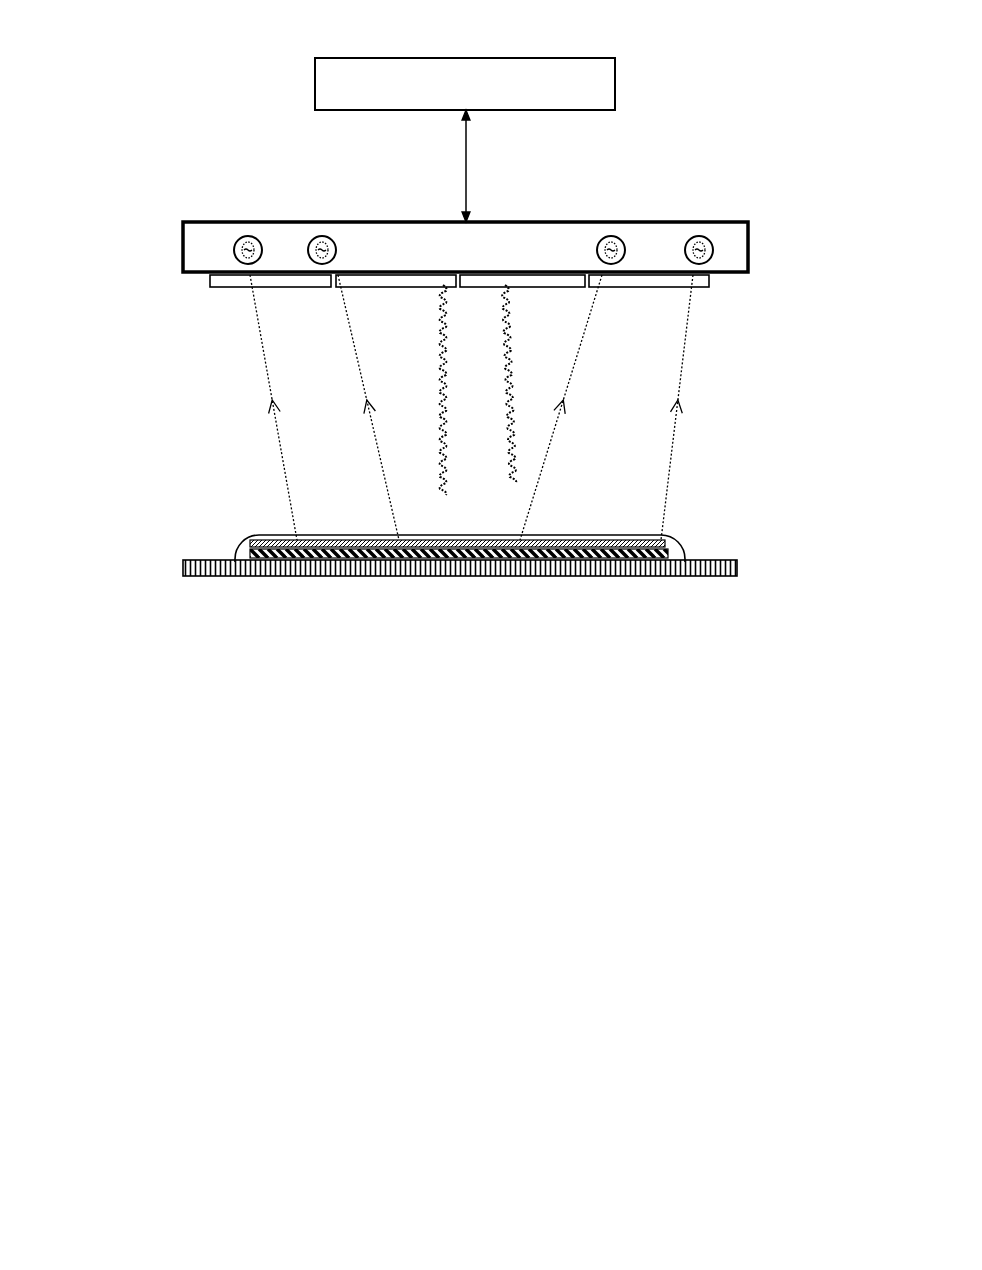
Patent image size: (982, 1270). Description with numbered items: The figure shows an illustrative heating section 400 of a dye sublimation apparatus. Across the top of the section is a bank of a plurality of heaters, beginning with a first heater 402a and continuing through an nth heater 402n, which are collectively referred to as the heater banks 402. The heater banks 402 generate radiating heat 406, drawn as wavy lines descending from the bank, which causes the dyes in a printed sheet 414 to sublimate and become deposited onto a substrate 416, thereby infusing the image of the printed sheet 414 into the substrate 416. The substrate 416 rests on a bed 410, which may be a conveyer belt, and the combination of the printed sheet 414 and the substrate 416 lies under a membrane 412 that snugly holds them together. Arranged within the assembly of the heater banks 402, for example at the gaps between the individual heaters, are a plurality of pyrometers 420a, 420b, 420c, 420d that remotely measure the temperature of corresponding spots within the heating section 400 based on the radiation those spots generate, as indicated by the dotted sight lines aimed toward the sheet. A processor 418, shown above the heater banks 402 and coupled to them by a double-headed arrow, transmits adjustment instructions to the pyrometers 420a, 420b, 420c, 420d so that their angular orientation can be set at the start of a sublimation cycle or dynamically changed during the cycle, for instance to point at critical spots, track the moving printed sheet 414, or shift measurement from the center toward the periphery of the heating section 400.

The heating section 400 is at (480, 998).
The processor 418 is at (538, 102).
The heater banks 402 is at (570, 263).
The heater 402a is at (210, 282).
The heater 402n is at (709, 282).
The pyrometer 420a is at (242, 235).
The pyrometer 420b is at (317, 235).
The pyrometer 420c is at (605, 238).
The pyrometer 420d is at (694, 238).
The radiating heat 406 is at (435, 335).
The membrane 412 is at (247, 537).
The printed sheet 414 is at (247, 545).
The substrate 416 is at (250, 552).
The bed 410 is at (508, 573).